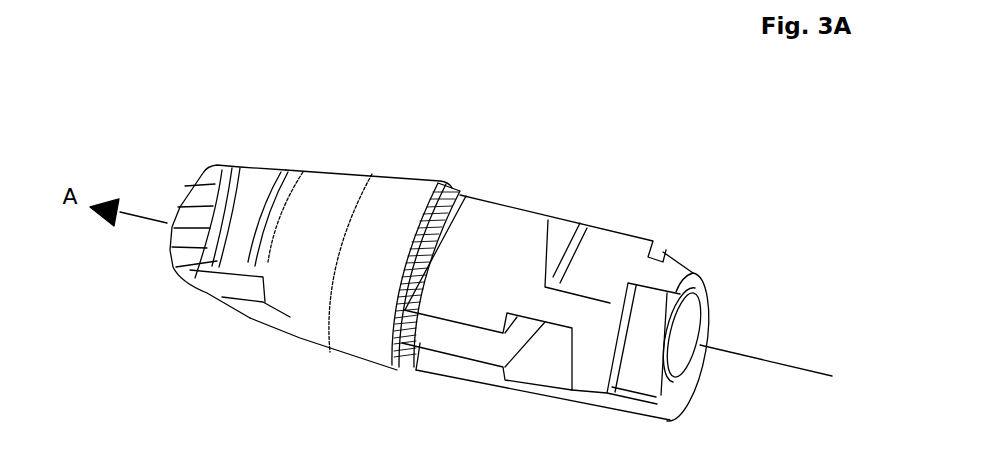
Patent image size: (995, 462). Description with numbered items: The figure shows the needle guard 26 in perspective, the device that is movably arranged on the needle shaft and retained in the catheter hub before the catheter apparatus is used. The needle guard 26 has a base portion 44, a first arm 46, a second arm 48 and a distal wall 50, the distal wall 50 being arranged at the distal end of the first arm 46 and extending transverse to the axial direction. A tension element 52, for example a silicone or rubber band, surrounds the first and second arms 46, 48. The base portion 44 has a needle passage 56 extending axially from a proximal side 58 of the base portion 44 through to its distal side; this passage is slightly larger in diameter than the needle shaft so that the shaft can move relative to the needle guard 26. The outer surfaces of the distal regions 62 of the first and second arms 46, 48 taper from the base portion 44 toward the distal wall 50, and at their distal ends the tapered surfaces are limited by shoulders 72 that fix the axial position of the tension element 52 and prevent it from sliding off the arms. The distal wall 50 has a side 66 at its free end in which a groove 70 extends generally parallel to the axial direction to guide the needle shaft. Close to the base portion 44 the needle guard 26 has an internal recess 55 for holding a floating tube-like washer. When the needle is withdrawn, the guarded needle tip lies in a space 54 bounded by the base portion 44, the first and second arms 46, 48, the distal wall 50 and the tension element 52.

The needle guard 26 is at (563, 108).
The base portion 44 is at (673, 277).
The first arm 46 is at (460, 367).
The second arm 48 is at (543, 220).
The distal wall 50 is at (172, 237).
The tension element 52 is at (387, 195).
The space 54 is at (415, 365).
The internal recess 55 is at (560, 290).
The needle passage 56 is at (697, 312).
The proximal side 58 is at (684, 394).
The distal regions 62 is at (222, 297).
The side 66 is at (230, 173).
The groove 70 is at (203, 193).
The shoulders 72 is at (281, 172).